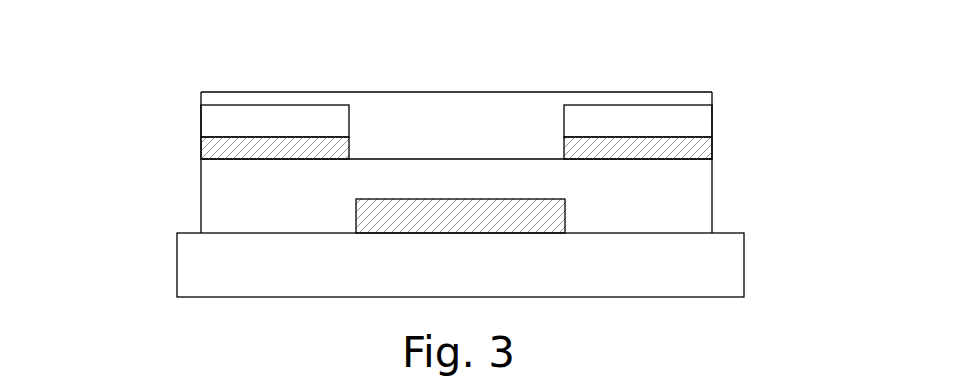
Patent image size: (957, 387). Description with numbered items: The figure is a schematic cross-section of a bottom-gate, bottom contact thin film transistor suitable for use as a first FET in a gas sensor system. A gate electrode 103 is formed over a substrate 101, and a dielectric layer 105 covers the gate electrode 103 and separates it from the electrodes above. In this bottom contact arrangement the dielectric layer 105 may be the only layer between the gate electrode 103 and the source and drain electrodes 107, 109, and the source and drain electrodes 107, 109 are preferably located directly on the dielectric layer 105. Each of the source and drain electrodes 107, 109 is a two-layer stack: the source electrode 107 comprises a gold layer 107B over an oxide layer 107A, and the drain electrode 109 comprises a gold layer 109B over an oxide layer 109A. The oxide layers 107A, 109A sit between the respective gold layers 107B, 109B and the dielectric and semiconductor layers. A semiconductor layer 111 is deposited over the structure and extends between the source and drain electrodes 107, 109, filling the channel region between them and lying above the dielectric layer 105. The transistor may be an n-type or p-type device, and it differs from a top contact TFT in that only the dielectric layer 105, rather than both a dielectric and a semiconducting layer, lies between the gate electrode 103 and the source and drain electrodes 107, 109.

The substrate 101 is at (744, 269).
The gate electrode 103 is at (520, 236).
The dielectric layer 105 is at (712, 197).
The source electrode 107 is at (178, 142).
The oxide layer 107A is at (201, 149).
The gold layer 107B is at (201, 113).
The drain electrode 109 is at (747, 140).
The oxide layer 109A is at (712, 149).
The gold layer 109B is at (712, 113).
The semiconductor layer 111 is at (471, 135).